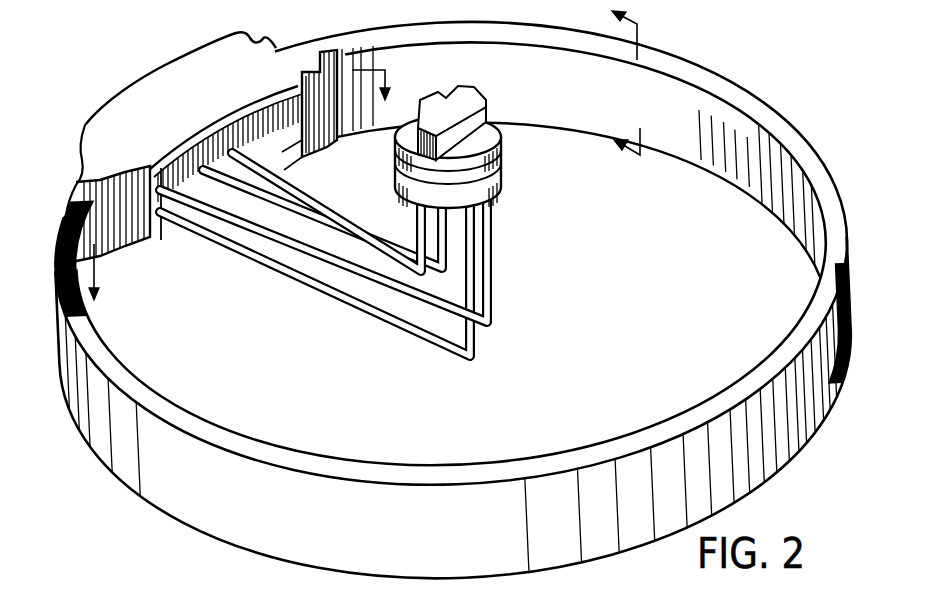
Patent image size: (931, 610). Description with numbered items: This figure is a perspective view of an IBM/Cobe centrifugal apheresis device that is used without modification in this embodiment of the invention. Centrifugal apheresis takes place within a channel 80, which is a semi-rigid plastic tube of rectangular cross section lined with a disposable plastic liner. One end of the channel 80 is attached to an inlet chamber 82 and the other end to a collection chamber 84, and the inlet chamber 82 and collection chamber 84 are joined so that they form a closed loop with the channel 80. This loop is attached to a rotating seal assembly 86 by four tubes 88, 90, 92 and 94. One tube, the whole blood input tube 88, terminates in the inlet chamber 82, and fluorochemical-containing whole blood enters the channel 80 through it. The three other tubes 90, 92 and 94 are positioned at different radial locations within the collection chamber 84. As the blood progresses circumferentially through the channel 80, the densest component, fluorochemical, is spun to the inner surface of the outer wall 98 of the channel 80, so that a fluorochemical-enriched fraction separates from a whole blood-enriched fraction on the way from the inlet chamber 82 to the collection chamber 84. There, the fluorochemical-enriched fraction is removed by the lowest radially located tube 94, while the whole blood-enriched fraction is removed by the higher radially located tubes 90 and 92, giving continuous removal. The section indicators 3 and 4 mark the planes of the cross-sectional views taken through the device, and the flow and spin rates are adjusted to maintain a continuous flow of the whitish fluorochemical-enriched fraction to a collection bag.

The channel 80 is at (451, 287).
The inlet chamber 82 is at (100, 170).
The collection chamber 84 is at (236, 56).
The rotating seal assembly 86 is at (502, 171).
The whole blood input tube 88 is at (274, 263).
The tube 90 is at (328, 252).
The tube 92 is at (336, 210).
The tube 94 is at (302, 175).
The outer wall 98 is at (328, 546).
The section line 3- 3 is at (643, 102).
The section line 4- 4 is at (255, 180).